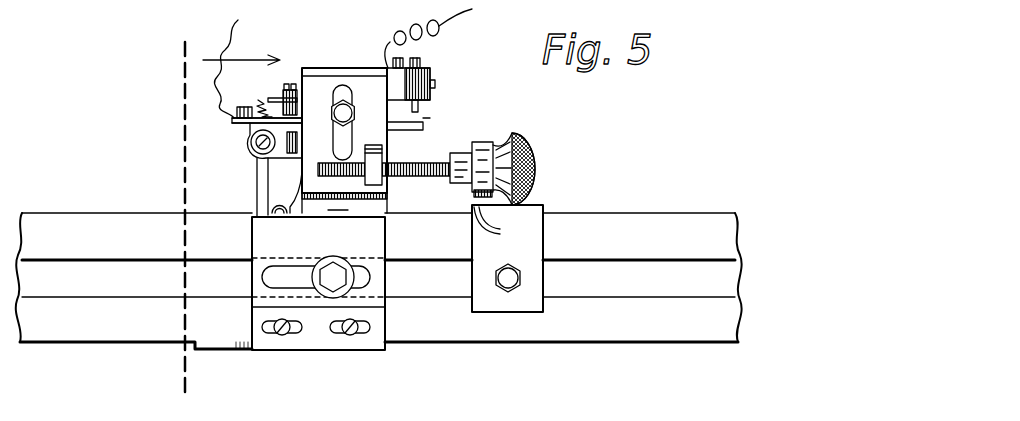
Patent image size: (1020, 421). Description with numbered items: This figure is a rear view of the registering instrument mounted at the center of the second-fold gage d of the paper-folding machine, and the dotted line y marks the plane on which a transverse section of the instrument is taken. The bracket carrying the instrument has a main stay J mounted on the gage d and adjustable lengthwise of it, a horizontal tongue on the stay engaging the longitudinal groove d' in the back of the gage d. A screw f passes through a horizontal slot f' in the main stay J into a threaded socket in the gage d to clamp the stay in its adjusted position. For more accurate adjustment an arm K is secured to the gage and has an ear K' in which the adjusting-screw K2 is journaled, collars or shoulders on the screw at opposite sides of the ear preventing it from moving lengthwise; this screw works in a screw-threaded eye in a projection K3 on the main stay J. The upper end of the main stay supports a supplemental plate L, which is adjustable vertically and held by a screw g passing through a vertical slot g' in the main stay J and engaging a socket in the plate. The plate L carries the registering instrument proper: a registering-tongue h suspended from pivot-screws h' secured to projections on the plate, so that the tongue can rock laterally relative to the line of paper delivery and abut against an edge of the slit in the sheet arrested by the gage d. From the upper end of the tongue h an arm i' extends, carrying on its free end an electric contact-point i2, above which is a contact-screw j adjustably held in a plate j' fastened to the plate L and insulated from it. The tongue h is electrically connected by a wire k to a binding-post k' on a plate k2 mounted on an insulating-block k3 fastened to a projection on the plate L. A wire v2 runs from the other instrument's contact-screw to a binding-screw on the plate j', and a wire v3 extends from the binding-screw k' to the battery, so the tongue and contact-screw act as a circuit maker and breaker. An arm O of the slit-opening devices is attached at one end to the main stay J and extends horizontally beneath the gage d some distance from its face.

The gage d is at (379, 263).
The longitudinal groove d' is at (379, 309).
The section line Y Y y is at (178, 219).
The arm O is at (301, 350).
The screw f is at (333, 264).
The horizontal slot f' is at (316, 260).
The registering-tongue h is at (265, 187).
The pivot-screws h' is at (258, 139).
The wire k is at (259, 98).
The binding-post k' is at (288, 90).
The plate k2 is at (278, 97).
The insulating-block k3 is at (302, 120).
The wire v3 is at (228, 43).
The supplemental plate L is at (344, 116).
The screw g is at (351, 105).
The vertical slot g' is at (329, 122).
The main stay J is at (344, 202).
The adjusting-screw K2 is at (458, 183).
The projection K3 is at (388, 182).
The ear K' is at (503, 156).
The arm K is at (507, 258).
The plate j' is at (421, 79).
The contact-screw j is at (427, 111).
The arm i' is at (405, 138).
The electric contact-point i2 is at (424, 119).
The wire v2 is at (428, 38).